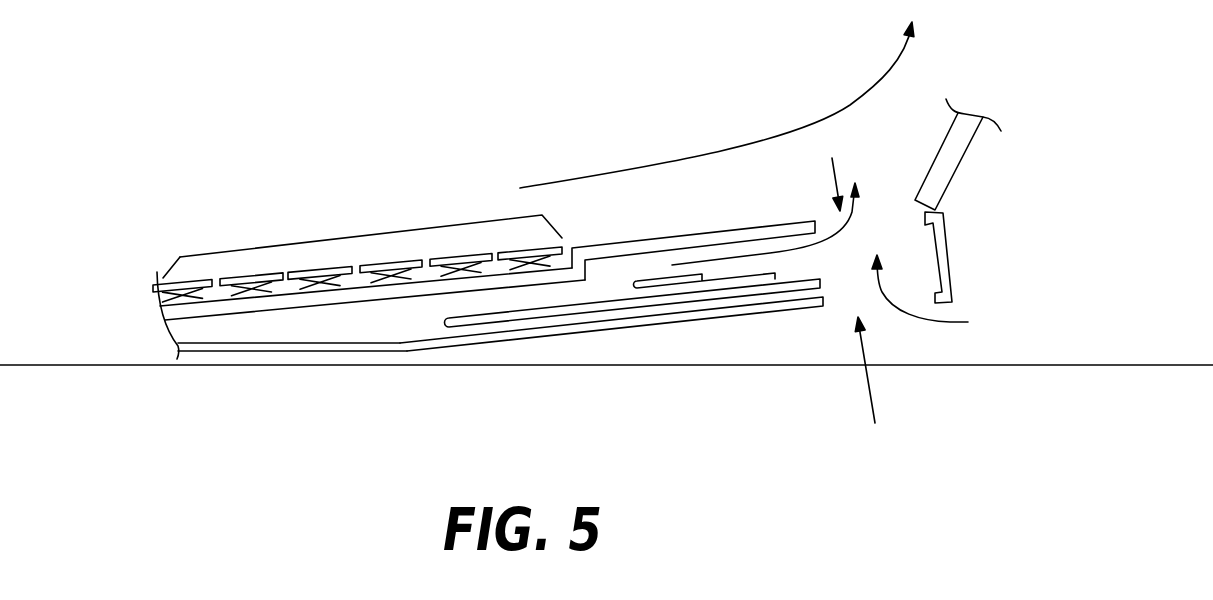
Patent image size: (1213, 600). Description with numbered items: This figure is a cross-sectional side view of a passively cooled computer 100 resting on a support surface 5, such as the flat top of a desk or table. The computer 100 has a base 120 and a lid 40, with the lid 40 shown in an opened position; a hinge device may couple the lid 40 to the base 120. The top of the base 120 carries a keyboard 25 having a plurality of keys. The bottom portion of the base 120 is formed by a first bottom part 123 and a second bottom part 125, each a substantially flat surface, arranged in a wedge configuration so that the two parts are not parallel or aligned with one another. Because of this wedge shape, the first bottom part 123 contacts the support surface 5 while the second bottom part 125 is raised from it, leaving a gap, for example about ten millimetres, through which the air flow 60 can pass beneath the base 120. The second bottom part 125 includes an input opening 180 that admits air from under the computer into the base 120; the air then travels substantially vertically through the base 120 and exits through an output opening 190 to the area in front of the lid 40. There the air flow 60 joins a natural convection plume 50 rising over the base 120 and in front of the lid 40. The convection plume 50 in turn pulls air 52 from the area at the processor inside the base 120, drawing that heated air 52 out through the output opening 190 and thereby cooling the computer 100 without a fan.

The support surface 5 is at (133, 367).
The keyboard 25 is at (353, 238).
The lid 40 is at (967, 152).
The convection plume 50 is at (892, 82).
The air 52 is at (813, 249).
The air flow 60 is at (950, 322).
The computer 100 is at (312, 148).
The base 120 is at (668, 234).
The first bottom part 123 is at (290, 345).
The second bottom part 125 is at (693, 322).
The input opening 180 is at (877, 389).
The output opening 190 is at (830, 170).